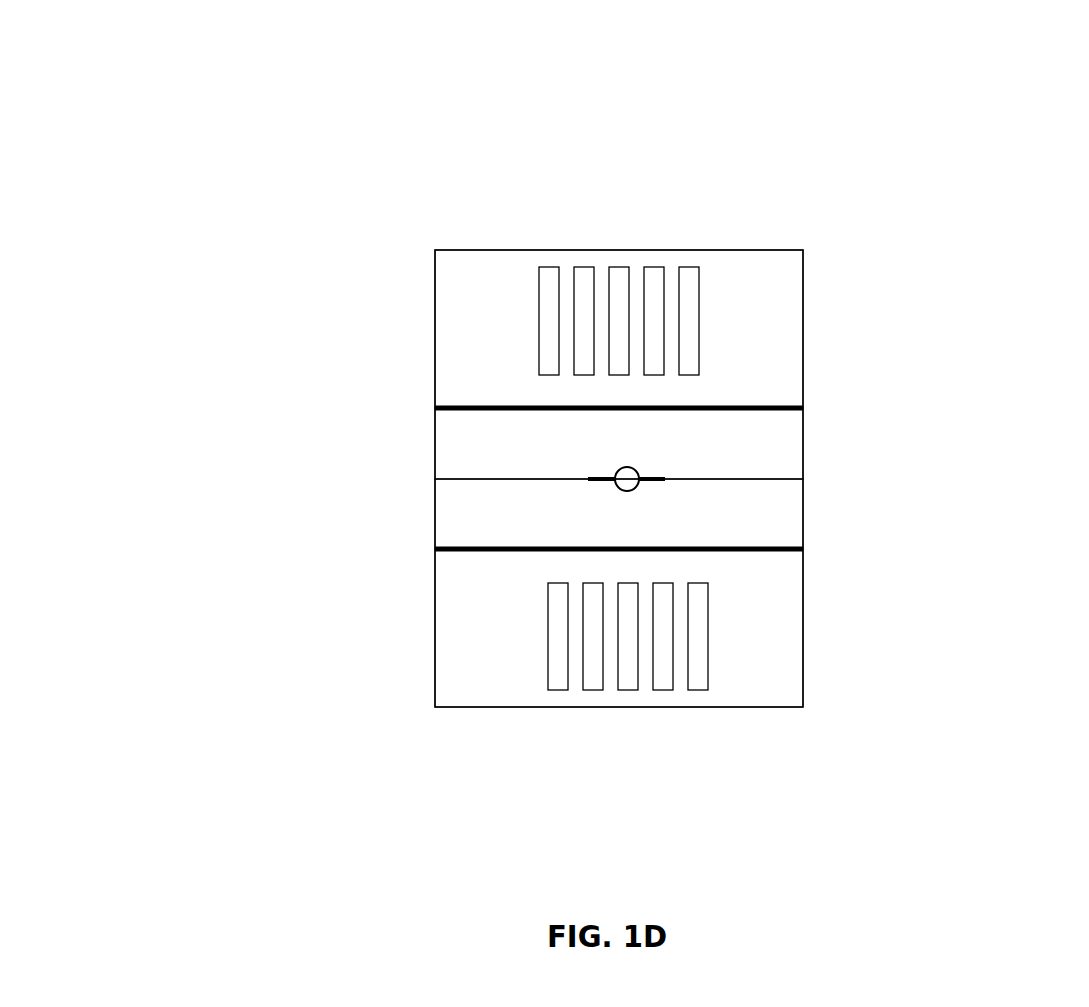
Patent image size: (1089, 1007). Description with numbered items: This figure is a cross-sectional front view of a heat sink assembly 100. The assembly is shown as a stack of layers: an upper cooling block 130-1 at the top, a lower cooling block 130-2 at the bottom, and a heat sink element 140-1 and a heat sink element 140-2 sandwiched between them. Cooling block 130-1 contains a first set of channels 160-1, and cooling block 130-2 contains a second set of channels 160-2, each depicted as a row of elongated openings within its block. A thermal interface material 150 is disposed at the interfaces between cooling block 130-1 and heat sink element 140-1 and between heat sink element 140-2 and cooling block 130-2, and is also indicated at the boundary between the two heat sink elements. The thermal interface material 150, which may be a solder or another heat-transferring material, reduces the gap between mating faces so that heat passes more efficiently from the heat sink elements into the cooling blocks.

The heat sink assembly 100 is at (132, 57).
The cooling block 130-1 is at (500, 329).
The cooling block 130-2 is at (500, 628).
The heat sink element 140-1 is at (475, 443).
The heat sink element 140-2 is at (475, 514).
The thermal interface material 150 is at (803, 479).
The first set of channels 160-1 is at (517, 283).
The second set of channels 160-2 is at (529, 681).